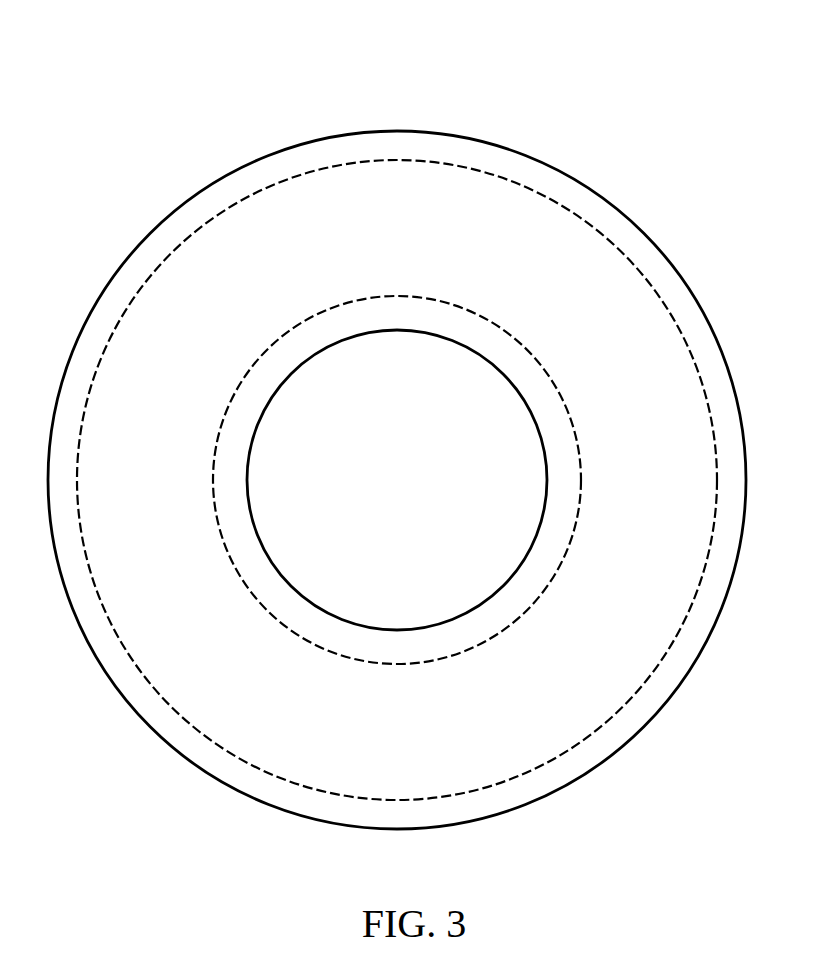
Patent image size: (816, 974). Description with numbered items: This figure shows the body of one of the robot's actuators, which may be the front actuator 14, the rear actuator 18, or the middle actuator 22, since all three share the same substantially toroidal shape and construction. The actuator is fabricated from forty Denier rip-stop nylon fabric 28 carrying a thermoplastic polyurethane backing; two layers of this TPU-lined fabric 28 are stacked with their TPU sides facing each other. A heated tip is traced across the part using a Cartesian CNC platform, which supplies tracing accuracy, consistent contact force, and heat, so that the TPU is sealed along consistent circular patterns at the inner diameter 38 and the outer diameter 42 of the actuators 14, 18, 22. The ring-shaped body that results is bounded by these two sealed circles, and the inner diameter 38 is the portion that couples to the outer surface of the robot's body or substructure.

The front actuator 14 is at (396, 430).
The rear actuator 18 is at (396, 430).
The middle actuator 22 is at (397, 108).
The rip-stop nylon fabric 28 is at (158, 625).
The outer diameter 42 is at (600, 232).
The inner diameter 38 is at (582, 481).